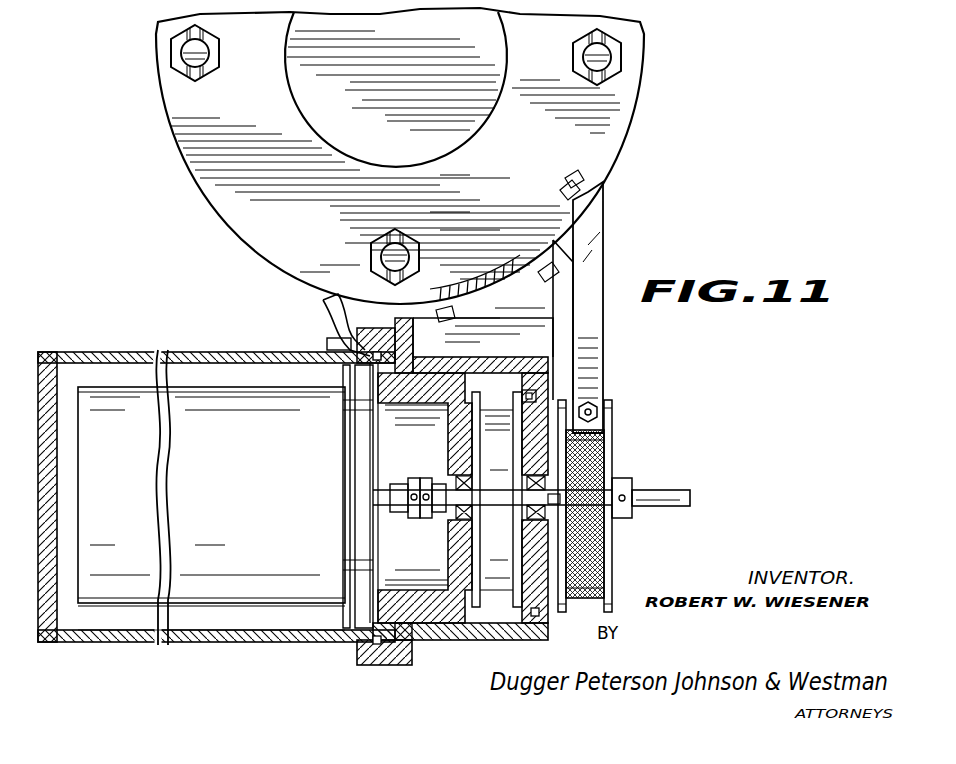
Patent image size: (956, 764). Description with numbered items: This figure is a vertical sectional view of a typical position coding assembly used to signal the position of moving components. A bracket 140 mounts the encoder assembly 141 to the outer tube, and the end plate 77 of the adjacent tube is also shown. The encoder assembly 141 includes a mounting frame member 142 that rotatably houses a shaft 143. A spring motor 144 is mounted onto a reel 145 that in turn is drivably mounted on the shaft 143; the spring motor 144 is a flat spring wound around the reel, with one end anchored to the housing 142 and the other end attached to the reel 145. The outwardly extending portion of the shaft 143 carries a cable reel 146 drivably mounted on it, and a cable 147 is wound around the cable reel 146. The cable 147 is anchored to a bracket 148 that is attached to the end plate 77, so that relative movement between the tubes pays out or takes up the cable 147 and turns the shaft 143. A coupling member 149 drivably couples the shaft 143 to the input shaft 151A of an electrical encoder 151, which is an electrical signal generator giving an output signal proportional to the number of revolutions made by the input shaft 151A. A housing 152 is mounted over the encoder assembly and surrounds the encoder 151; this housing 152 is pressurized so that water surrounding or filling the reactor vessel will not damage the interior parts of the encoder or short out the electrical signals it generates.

The end plate 77 is at (618, 98).
The bracket 148 is at (598, 262).
The housing 152 is at (213, 350).
The electrical encoder 151 is at (238, 471).
The input shaft 151A is at (395, 520).
The bracket 140 is at (356, 340).
The reel 145 is at (527, 393).
The coupling member 149 is at (406, 484).
The cable reel 146 is at (612, 442).
The cable 147 is at (600, 470).
The shaft 143 is at (690, 492).
The spring motor 144 is at (512, 560).
The encoder assembly 141 is at (242, 650).
The mounting frame member 142 is at (375, 645).